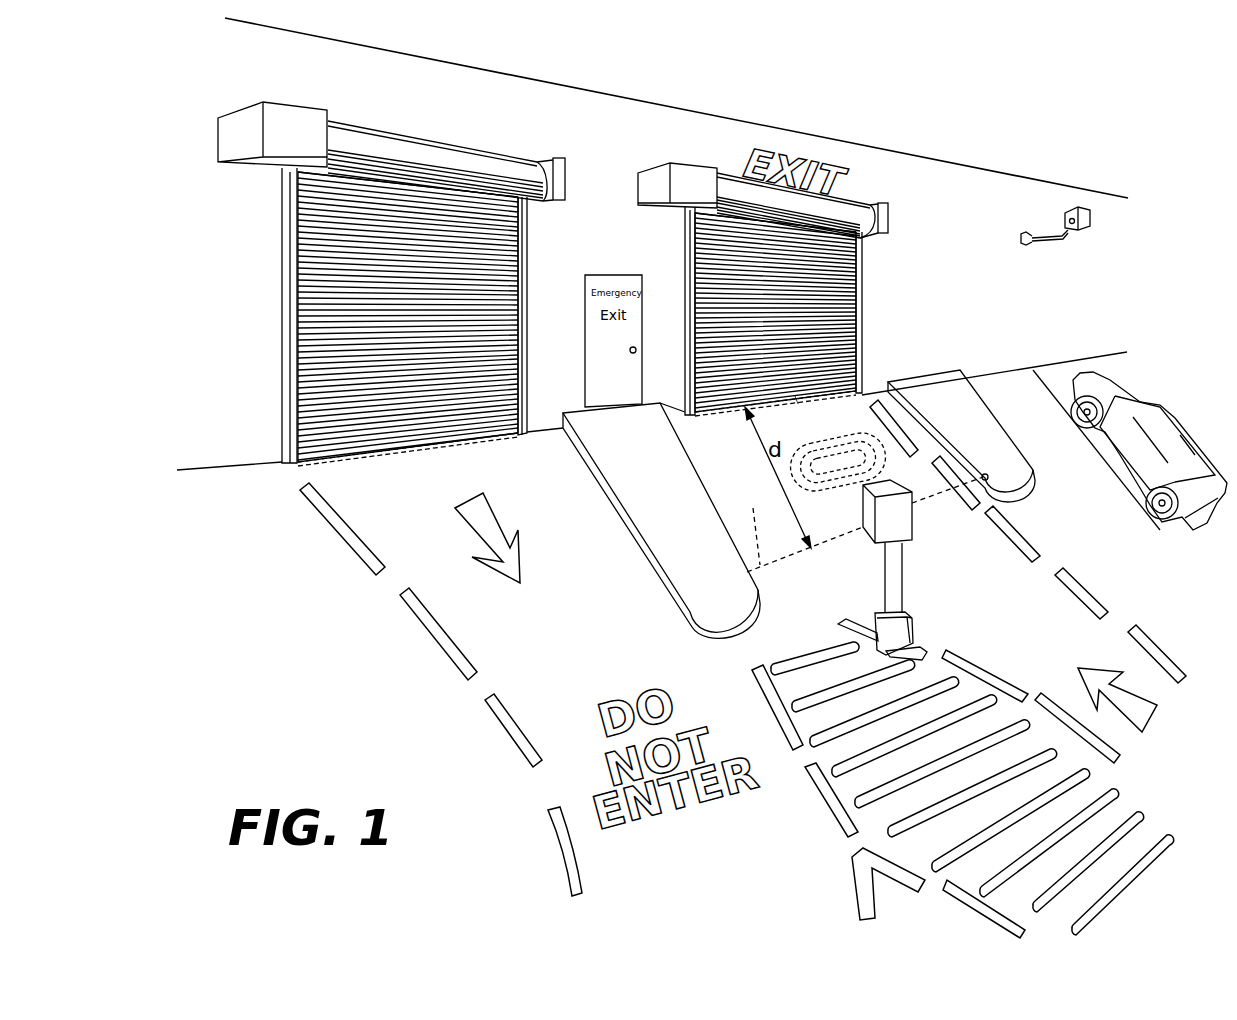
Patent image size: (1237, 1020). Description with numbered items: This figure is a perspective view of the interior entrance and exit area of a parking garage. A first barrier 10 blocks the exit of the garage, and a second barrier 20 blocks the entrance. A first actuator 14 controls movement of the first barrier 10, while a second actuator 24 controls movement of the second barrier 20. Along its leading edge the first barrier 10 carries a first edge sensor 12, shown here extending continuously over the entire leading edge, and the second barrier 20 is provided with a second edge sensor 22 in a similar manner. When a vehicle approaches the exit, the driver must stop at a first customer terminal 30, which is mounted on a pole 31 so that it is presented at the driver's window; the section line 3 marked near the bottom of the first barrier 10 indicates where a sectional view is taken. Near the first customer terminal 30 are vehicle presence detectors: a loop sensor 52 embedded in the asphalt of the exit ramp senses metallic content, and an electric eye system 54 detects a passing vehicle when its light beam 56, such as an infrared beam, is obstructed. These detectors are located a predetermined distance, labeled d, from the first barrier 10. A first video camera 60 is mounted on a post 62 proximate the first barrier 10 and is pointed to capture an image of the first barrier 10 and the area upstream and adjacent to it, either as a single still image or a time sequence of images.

The first barrier 10 is at (872, 290).
The first edge sensor 12 is at (747, 405).
The first actuator 14 is at (650, 168).
The second barrier 20 is at (258, 291).
The second edge sensor 22 is at (383, 458).
The second actuator 24 is at (248, 117).
The section line 3- 3 is at (810, 393).
The first customer terminal 30 is at (863, 546).
The pole 31 is at (905, 568).
The loop sensor 52 is at (838, 481).
The electric eye system 54 is at (985, 470).
The light beam 56 is at (859, 524).
The first video camera 60 is at (1093, 213).
The post 62 is at (1045, 240).